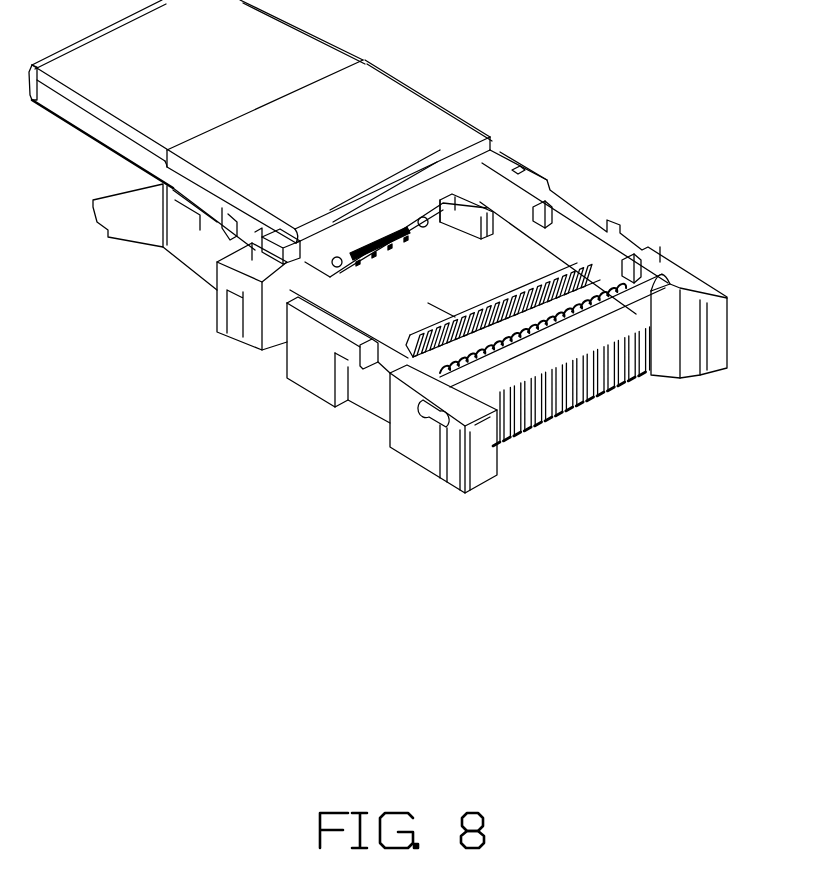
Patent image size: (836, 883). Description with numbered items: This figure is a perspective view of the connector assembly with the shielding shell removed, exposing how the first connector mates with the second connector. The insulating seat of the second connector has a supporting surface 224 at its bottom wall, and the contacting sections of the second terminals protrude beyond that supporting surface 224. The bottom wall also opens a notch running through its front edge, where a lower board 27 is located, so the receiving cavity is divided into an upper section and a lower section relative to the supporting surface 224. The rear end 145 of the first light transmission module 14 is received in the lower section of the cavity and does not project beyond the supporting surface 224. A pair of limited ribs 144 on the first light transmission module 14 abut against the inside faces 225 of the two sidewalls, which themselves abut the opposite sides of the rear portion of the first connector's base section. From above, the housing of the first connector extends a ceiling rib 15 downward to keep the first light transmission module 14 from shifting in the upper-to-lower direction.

The first light transmission module 14 is at (260, 125).
The limited ribs 144 is at (457, 197).
The supporting surface 224 is at (517, 210).
The inside faces 225 is at (550, 257).
The ceiling rib 15 is at (267, 238).
The rear end 145 is at (293, 247).
The lower board 27 is at (505, 347).